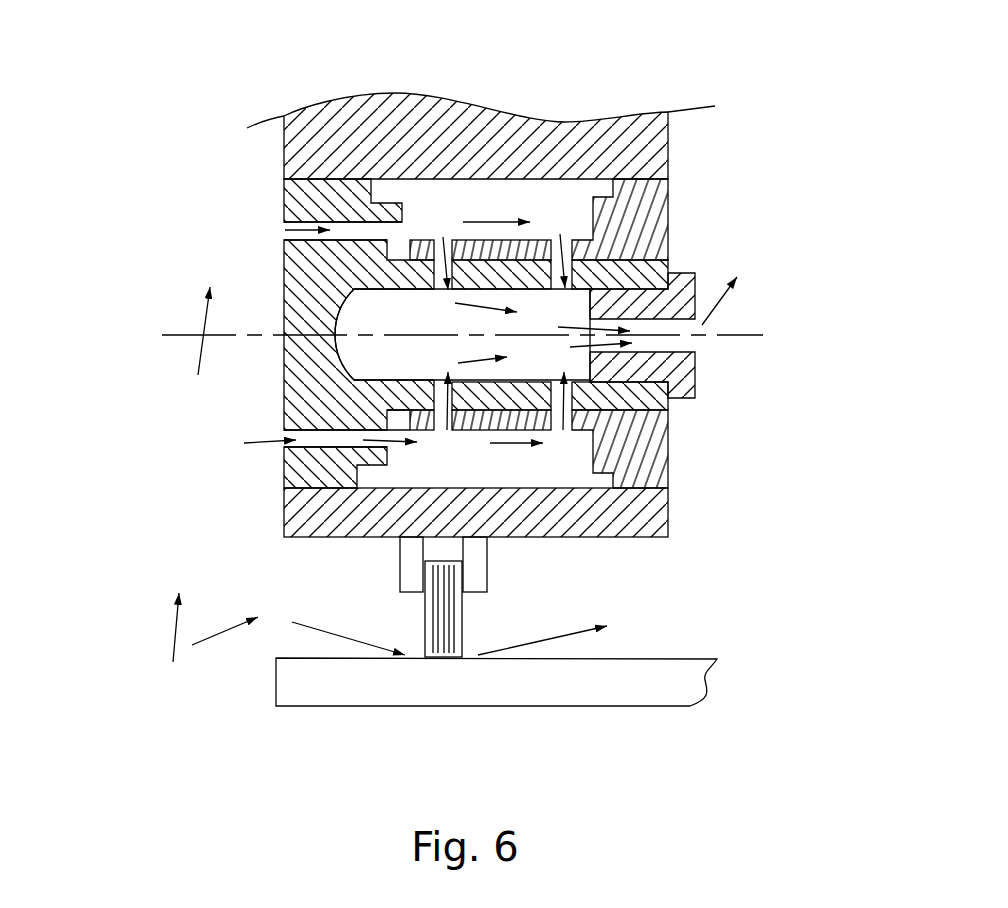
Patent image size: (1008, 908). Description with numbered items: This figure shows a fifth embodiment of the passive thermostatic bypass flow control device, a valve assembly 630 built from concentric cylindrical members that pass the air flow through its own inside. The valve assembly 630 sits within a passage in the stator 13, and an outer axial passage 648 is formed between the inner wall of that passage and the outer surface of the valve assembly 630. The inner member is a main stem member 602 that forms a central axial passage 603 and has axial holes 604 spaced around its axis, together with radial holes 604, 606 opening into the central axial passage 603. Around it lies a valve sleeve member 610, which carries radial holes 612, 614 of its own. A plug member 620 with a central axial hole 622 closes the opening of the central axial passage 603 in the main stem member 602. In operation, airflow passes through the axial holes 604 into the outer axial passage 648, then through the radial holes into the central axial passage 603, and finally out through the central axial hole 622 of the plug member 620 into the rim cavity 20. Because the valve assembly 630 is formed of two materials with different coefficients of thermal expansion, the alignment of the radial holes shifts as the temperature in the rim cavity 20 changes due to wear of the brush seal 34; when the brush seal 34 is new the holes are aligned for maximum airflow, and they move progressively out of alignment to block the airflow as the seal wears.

The stator 13 is at (392, 117).
The valve assembly 630 is at (195, 122).
The main stem member 602 is at (282, 267).
The axial holes 604 is at (281, 228).
The central axial passage 603 is at (370, 318).
The plug member 620 is at (685, 364).
The radial holes 606 is at (437, 393).
The central axial hole 622 is at (688, 332).
The valve sleeve member 610 is at (647, 217).
The radial holes 612 is at (563, 431).
The outer axial passage 648 is at (437, 473).
The radial holes 614 is at (449, 431).
The brush seal 34 is at (423, 625).
The rim cavity 20 is at (845, 259).